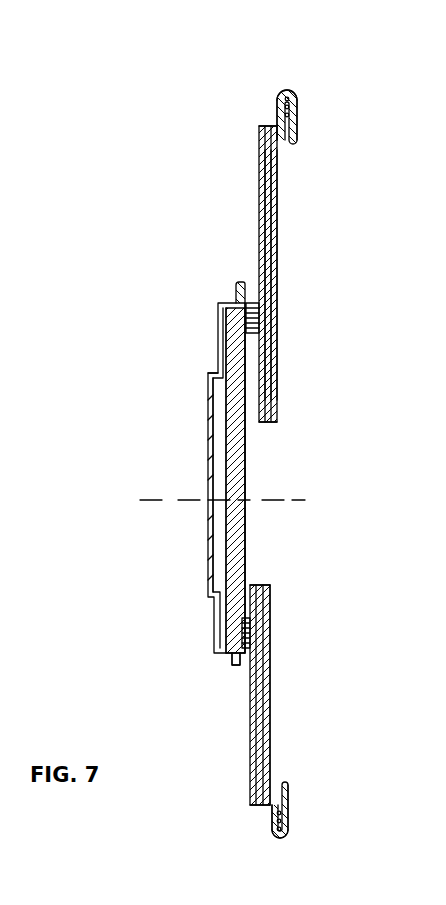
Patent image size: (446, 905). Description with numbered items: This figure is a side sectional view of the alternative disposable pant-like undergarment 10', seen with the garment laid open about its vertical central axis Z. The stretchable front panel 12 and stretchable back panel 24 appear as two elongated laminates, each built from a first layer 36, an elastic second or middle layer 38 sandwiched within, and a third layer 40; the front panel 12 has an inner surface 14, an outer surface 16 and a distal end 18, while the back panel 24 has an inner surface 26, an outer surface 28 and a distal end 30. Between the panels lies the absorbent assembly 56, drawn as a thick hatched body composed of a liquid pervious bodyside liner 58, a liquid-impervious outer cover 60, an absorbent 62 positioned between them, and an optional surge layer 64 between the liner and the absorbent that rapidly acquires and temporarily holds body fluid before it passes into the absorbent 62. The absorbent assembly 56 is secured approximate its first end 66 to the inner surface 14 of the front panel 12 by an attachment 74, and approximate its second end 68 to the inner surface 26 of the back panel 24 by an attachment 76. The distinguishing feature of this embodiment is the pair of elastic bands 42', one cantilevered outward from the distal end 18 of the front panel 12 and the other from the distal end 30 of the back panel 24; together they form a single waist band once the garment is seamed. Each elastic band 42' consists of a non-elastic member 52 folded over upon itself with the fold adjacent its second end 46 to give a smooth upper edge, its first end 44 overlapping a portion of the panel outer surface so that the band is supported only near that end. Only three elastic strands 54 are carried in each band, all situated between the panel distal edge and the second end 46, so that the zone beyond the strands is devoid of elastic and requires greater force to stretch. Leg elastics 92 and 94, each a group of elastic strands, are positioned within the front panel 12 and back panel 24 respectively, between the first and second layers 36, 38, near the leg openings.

The disposable pant-like undergarment 10' is at (221, 66).
The front panel 12 is at (247, 808).
The inner surface 14 is at (256, 770).
The outer surface 16 is at (270, 748).
The distal end 18 is at (258, 808).
The back panel 24 is at (255, 139).
The inner surface 26 is at (262, 205).
The outer surface 28 is at (274, 233).
The distal end 30 is at (268, 138).
The first layer 36 is at (262, 158).
The second or middle layer 38 is at (268, 204).
The third layer 40 is at (274, 266).
The elastic band 42' is at (327, 118).
The first end 44 is at (298, 142).
The second end 46 is at (289, 92).
The non-elastic member 52 is at (283, 96).
The elastic strands 54 is at (291, 117).
The absorbent assembly 56 is at (205, 562).
The bodyside liner 58 is at (208, 392).
The outer cover 60 is at (244, 534).
The absorbent 62 is at (232, 538).
The surge layer 64 is at (218, 440).
The first end 66 is at (236, 666).
The second end 68 is at (244, 284).
The attachment 74 is at (247, 650).
The attachment 76 is at (251, 302).
The leg elastic 92 is at (262, 586).
The leg elastic 94 is at (266, 424).
The vertical central axis Z is at (224, 500).